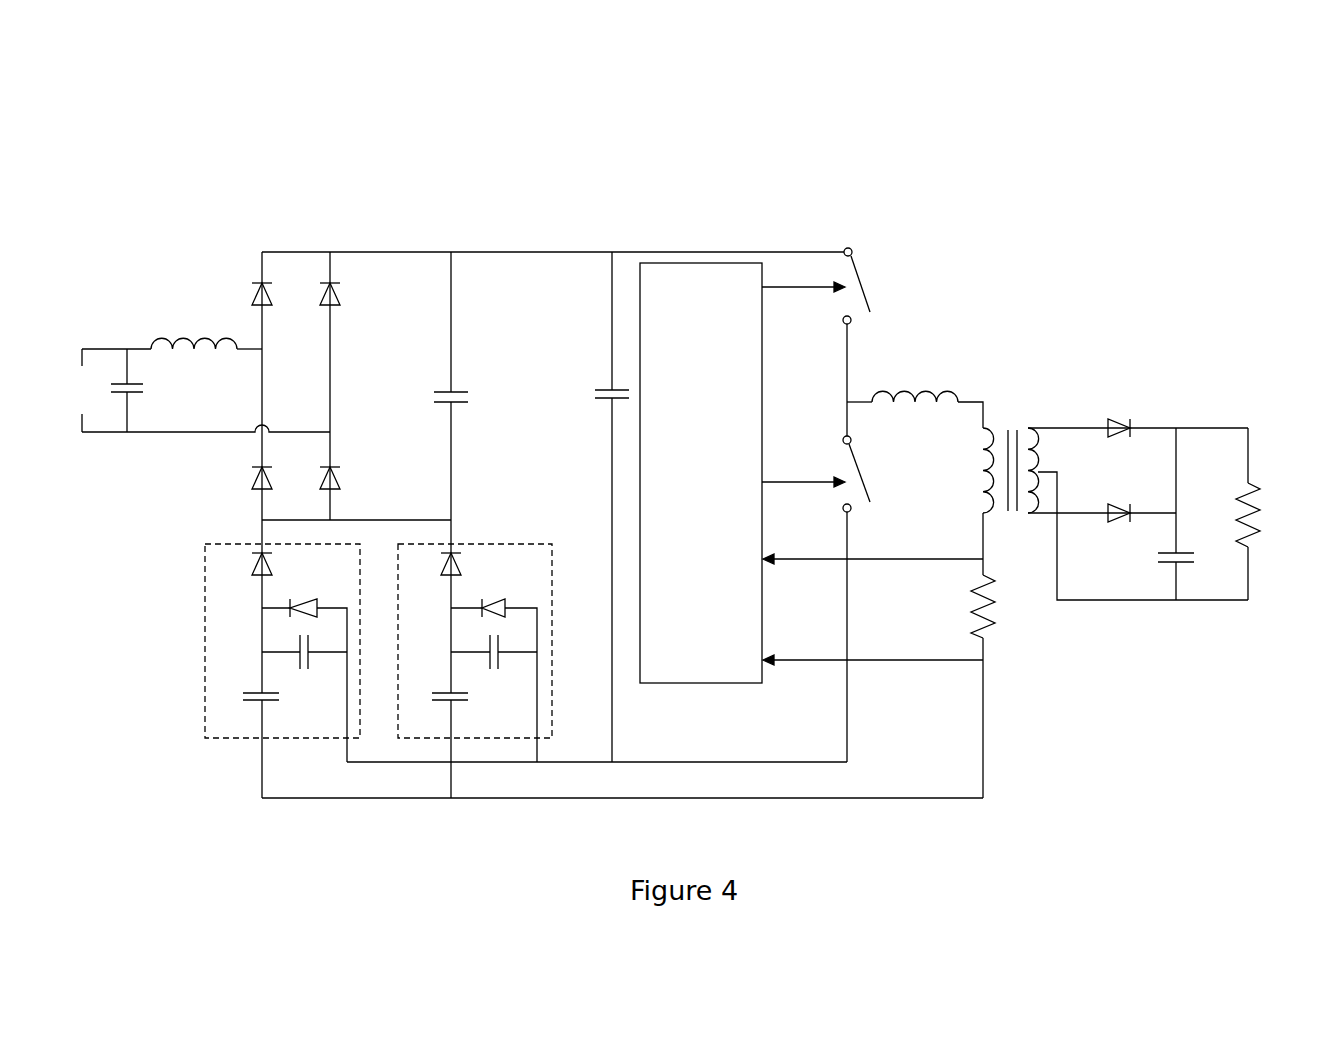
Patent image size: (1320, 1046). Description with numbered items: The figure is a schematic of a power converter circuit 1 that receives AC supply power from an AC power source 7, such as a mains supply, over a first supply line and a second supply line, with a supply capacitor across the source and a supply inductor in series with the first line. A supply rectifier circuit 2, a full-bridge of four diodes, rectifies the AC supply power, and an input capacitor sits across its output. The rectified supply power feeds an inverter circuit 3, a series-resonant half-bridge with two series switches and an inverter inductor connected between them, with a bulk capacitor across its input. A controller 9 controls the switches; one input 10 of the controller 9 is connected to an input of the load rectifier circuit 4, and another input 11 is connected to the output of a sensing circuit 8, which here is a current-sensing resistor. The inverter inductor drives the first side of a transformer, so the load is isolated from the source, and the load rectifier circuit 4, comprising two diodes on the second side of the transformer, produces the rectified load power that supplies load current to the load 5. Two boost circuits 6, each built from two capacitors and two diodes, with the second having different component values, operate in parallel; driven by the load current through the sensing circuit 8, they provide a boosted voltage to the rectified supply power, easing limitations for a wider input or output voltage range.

The power converter circuit 1 is at (268, 143).
The supply rectifier circuit 2 is at (355, 372).
The inverter circuit 3 is at (906, 324).
The load rectifier circuit 4 is at (1140, 380).
The load 5 is at (1278, 482).
The boost circuit 6 is at (192, 752).
The AC power source 7 is at (47, 400).
The sensing circuit 8 is at (1010, 660).
The controller 9 is at (742, 473).
The input of the controller 10 is at (760, 556).
The input of the controller 11 is at (760, 660).